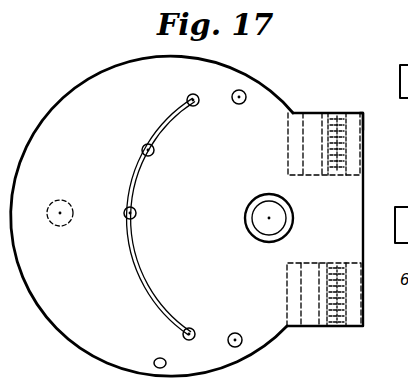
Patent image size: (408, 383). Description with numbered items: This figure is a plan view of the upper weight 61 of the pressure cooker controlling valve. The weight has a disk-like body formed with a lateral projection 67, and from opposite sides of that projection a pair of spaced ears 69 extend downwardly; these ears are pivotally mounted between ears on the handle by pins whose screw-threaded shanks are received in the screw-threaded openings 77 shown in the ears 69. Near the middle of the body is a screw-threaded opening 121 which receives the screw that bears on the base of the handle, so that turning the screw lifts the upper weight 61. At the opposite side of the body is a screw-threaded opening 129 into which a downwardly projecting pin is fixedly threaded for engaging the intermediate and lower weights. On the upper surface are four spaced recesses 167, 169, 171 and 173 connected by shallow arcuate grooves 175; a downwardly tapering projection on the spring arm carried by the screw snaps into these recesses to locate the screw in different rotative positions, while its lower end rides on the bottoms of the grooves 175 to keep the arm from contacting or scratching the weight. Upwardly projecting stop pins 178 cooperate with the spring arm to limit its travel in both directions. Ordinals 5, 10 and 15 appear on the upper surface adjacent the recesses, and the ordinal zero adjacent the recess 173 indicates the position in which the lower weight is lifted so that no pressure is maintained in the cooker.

The upper weight 61 is at (91, 94).
The turntable 15 is at (167, 70).
The frame 10 is at (111, 127).
The screw-threaded opening 129 is at (60, 199).
The housing 5 is at (91, 211).
The stop pins 178 is at (244, 93).
The recess 167 is at (198, 105).
The recess 169 is at (152, 155).
The recess 171 is at (137, 212).
The recess 173 is at (192, 327).
The arcuate grooves 175 is at (160, 127).
The screw-threaded opening 121 is at (294, 214).
The ears 69 is at (288, 133).
The screw-threaded openings 77 is at (338, 113).
The lateral projection 67 is at (358, 113).